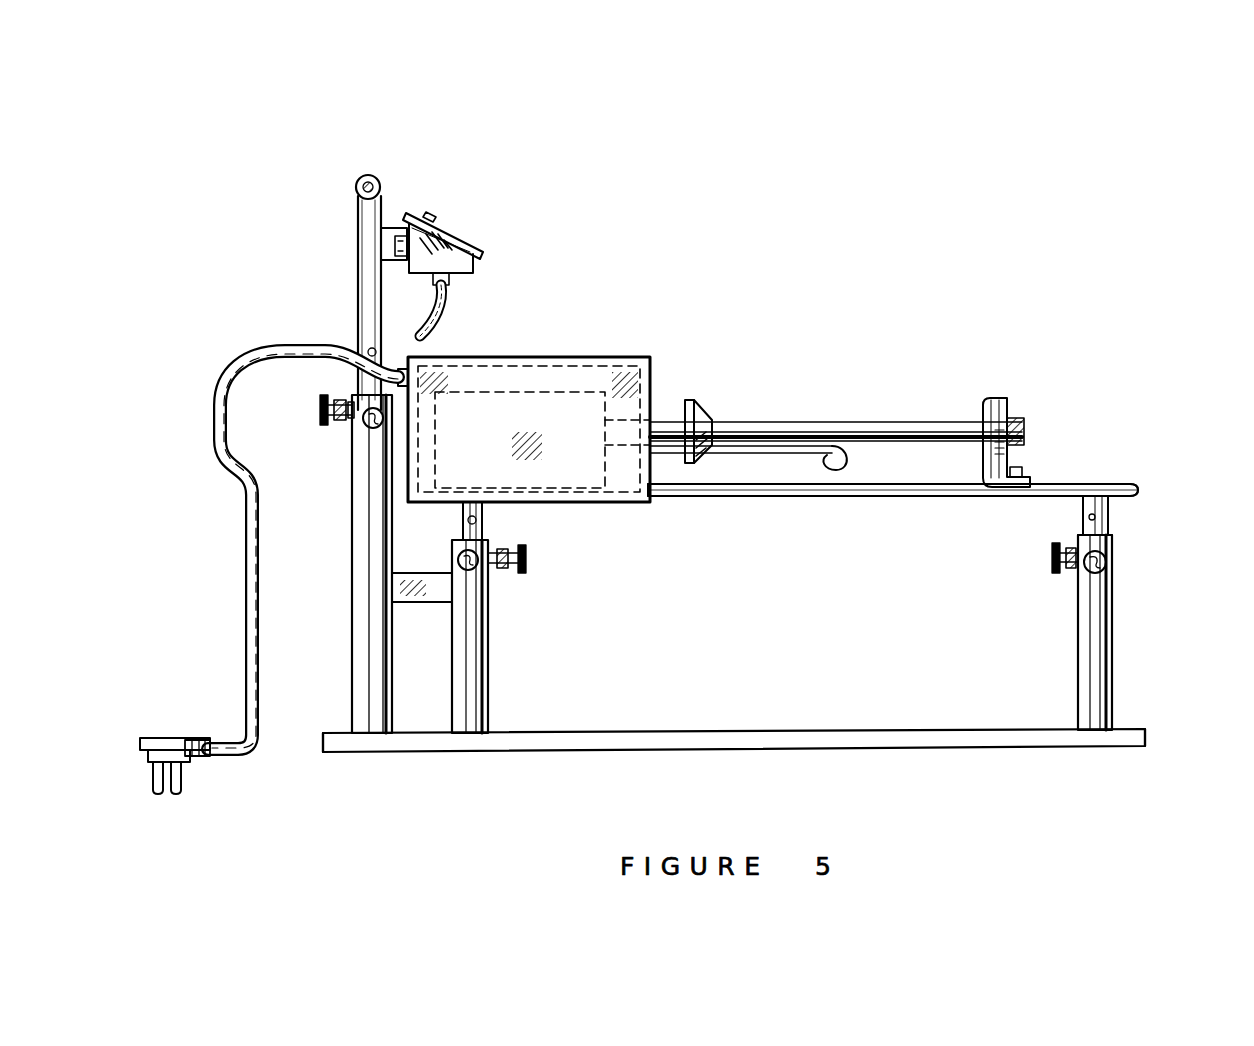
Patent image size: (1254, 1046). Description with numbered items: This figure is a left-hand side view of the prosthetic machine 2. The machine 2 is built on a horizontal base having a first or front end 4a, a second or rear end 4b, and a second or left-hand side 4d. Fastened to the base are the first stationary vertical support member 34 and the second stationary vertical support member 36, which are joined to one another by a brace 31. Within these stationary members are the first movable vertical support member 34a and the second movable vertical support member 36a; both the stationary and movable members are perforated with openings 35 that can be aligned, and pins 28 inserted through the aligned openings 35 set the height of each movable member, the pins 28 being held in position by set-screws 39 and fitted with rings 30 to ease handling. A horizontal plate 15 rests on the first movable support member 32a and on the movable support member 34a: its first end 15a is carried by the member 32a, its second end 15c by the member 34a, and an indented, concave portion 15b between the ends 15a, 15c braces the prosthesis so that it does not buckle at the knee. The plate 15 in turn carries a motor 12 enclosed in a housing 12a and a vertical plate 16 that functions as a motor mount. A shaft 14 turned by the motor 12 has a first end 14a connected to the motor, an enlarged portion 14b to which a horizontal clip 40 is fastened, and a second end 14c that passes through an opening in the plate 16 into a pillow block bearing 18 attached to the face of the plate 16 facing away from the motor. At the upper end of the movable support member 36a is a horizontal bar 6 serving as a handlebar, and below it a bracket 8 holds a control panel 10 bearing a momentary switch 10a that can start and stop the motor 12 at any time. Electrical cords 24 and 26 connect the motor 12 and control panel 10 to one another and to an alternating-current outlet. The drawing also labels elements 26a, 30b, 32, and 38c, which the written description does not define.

The prosthetic machine 2 is at (763, 112).
The first end of base 4a is at (1146, 738).
The second end of base 4b is at (324, 736).
The second side of base 4d is at (760, 735).
The horizontal bar 6 is at (365, 176).
The bracket 8 is at (400, 228).
The control panel 10 is at (468, 258).
The switch 10a is at (435, 215).
The motor 12 is at (600, 360).
The housing 12a is at (562, 357).
The shaft 14 is at (803, 297).
The first end of shaft 14a is at (686, 400).
The enlarged portion of shaft 14b is at (700, 440).
The second end of shaft 14c is at (915, 422).
The horizontal plate 15 is at (1117, 327).
The first end of plate 15a is at (980, 496).
The indented portion of plate 15b is at (805, 496).
The second end of plate 15c is at (657, 497).
The vertical plate 16 is at (988, 398).
The pillow block bearing 18 is at (1016, 400).
The electrical cord 24 is at (440, 325).
The electrical cord 26 is at (240, 540).
The plug 26a is at (182, 745).
The pins 28 is at (1106, 546).
The rings 30 is at (1108, 562).
The clamp knob 30b is at (480, 565).
The brace 31 is at (430, 600).
The right sleeve 32 is at (1112, 655).
The first movable support member 32a is at (1085, 514).
The first stationary vertical support member 34 is at (490, 700).
The first movable vertical support member 34a is at (468, 510).
The openings 35 is at (368, 345).
The second stationary vertical support member 36 is at (356, 608).
The second movable vertical support member 36a is at (380, 246).
The thumbscrew 38c is at (345, 410).
The set-screws 39 is at (1068, 570).
The horizontal clip 40 is at (832, 448).